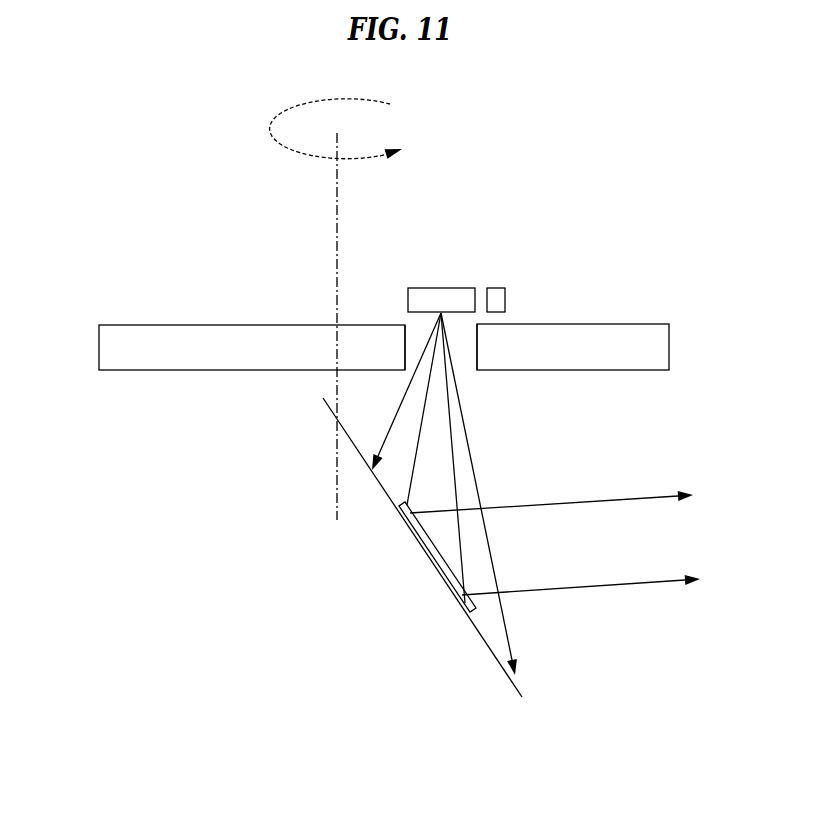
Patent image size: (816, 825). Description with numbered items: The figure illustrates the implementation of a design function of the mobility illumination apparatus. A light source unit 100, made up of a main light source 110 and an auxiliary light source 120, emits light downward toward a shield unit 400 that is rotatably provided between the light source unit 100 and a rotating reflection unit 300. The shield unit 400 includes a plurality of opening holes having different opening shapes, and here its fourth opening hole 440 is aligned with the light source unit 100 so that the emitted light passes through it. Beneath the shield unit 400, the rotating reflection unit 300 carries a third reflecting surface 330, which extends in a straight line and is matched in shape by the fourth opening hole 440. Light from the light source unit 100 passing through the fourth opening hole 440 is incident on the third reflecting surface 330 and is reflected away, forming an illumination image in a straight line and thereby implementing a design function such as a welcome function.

The light source unit 100 is at (489, 224).
The main light source 110 is at (448, 288).
The auxiliary light source 120 is at (528, 255).
The rotating reflection unit 300 is at (405, 559).
The third reflecting surface 330 is at (427, 552).
The shield unit 400 is at (212, 306).
The fourth opening hole 440 is at (405, 346).